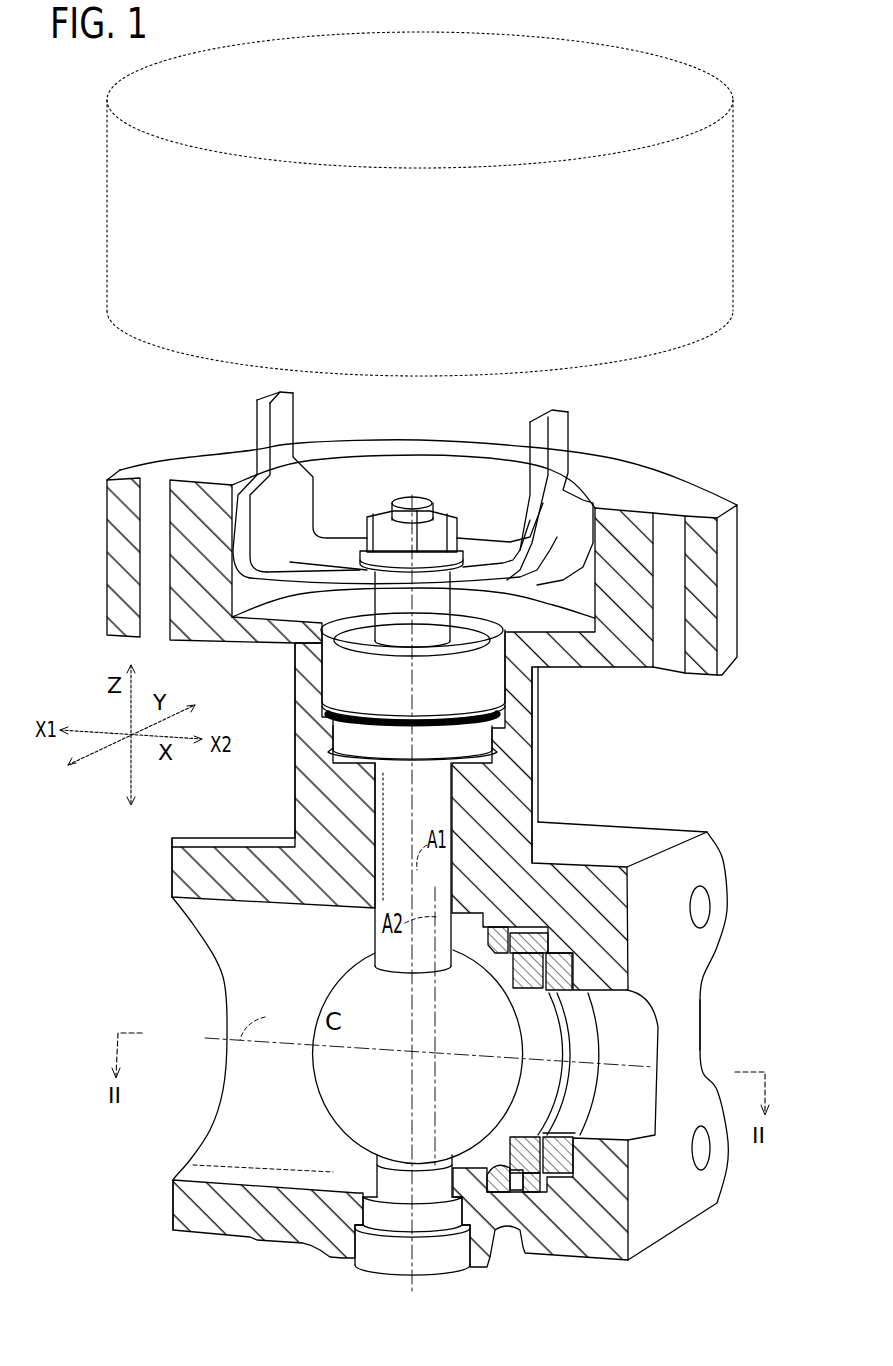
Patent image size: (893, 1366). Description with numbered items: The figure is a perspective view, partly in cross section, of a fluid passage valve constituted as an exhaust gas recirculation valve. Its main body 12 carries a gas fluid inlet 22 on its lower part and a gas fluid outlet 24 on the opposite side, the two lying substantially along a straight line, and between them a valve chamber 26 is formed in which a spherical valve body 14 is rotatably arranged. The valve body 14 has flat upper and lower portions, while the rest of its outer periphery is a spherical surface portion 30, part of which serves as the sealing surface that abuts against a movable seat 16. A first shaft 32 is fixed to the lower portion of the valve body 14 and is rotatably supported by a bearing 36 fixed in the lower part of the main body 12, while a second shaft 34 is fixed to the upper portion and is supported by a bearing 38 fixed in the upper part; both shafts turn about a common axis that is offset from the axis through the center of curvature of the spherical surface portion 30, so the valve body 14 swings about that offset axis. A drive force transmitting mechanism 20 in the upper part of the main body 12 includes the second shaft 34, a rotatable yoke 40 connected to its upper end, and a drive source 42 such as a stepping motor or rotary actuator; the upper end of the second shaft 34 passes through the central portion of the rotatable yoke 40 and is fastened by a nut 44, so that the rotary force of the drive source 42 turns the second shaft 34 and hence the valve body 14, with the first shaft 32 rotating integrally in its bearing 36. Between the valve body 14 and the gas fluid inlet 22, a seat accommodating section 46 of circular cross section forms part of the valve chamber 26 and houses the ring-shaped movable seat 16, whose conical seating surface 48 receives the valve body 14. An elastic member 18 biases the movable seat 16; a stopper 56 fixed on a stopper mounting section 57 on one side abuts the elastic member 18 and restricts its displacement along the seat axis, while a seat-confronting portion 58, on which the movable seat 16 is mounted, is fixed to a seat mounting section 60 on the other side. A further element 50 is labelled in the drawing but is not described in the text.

The main body 12 is at (683, 485).
The valve body 14 is at (348, 980).
The movable seat 16 is at (522, 973).
The elastic member 18 is at (522, 1145).
The drive force transmitting mechanism 20 is at (470, 802).
The gas fluid inlet 22 is at (630, 1017).
The gas fluid outlet 24 is at (232, 965).
The valve chamber 26 is at (335, 1170).
The spherical surface portion 30 is at (545, 1043).
The first shaft 32 is at (400, 1187).
The second shaft 34 is at (400, 810).
The bearing 36 is at (447, 1223).
The bearing 38 is at (480, 682).
The rotatable yoke 40 is at (560, 430).
The drive source 42 is at (735, 170).
The nut 44 is at (445, 533).
The seat accommodating section 46 is at (589, 951).
The seating surface 48 is at (548, 978).
The lower retainer 50 is at (520, 1185).
The stopper 56 is at (495, 1172).
The stopper mounting section 57 is at (529, 928).
The seat-confronting portion 58 is at (565, 1133).
The seat mounting section 60 is at (572, 1160).